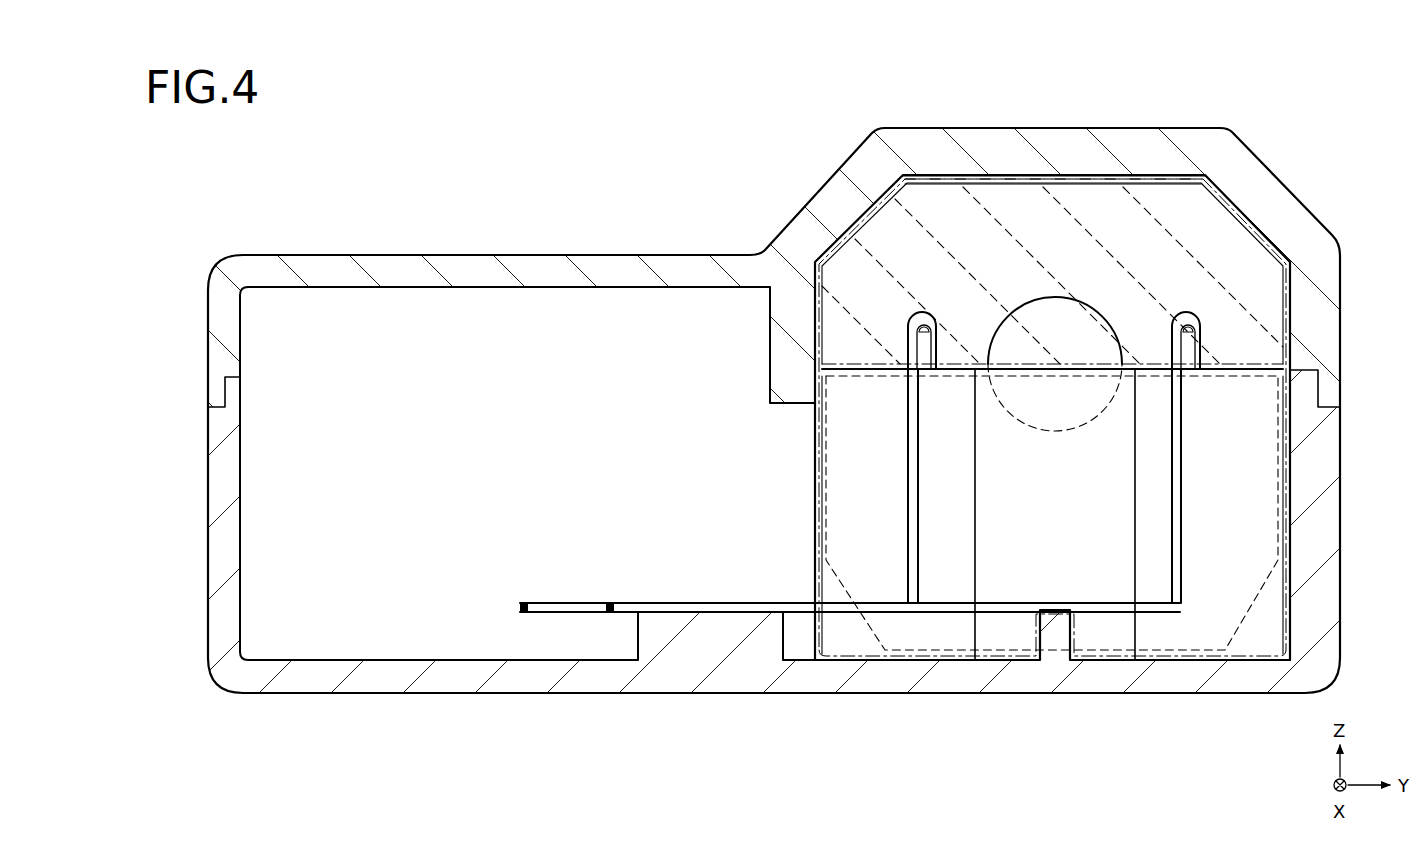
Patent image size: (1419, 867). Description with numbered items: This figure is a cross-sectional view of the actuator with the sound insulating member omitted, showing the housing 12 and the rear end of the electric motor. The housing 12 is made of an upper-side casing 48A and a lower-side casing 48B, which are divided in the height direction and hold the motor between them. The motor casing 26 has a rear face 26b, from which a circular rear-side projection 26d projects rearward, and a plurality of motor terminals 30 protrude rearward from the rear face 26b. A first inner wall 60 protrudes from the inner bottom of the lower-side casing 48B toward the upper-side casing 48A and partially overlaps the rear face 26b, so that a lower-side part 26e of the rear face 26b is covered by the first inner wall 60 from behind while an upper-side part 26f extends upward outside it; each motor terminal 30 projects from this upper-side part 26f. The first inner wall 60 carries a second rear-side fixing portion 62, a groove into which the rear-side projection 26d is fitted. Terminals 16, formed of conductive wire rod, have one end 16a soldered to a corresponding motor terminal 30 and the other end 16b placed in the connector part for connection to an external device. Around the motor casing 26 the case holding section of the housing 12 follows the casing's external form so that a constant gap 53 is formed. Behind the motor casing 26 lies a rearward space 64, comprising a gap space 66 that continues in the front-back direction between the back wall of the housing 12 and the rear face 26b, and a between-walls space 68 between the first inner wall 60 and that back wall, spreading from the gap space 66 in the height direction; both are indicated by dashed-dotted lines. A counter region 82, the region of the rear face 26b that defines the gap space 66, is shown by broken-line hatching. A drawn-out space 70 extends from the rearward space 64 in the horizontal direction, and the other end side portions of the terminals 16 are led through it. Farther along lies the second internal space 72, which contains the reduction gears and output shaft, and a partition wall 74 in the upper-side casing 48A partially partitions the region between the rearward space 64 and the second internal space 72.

The housing 12 is at (709, 405).
The terminal 16 is at (880, 443).
The one end of terminal 16a is at (907, 331).
The other end of terminal 16b is at (522, 598).
The motor casing 26 is at (1240, 212).
The rear face 26b is at (1070, 215).
The rear-side projection 26d is at (1053, 325).
The lower-side part 26e is at (840, 444).
The upper-side part 26f is at (876, 246).
The motor terminal 30 is at (925, 320).
The upper-side casing 48A is at (240, 360).
The lower-side casing 48B is at (240, 410).
The gap 53 is at (945, 175).
The first inner wall 60 is at (1245, 389).
The second rear-side fixing portion 62 is at (1045, 411).
The rearward space 64 is at (972, 212).
The gap space 66 is at (1158, 180).
The between-walls space 68 is at (1300, 549).
The drawn-out space 70 is at (798, 548).
The second internal space 72 is at (623, 322).
The partition wall 74 is at (778, 372).
The counter region 82 is at (1020, 212).